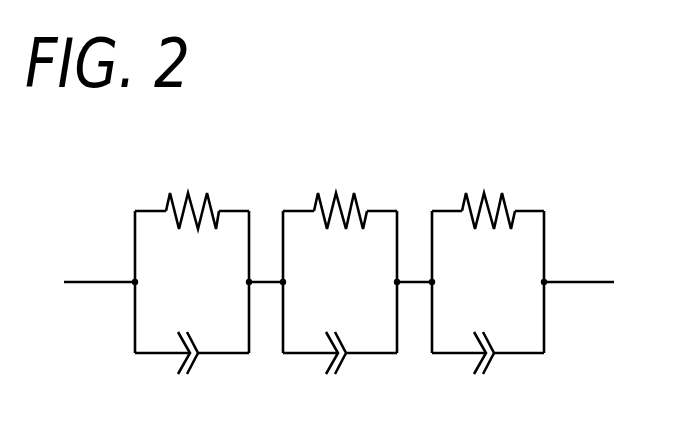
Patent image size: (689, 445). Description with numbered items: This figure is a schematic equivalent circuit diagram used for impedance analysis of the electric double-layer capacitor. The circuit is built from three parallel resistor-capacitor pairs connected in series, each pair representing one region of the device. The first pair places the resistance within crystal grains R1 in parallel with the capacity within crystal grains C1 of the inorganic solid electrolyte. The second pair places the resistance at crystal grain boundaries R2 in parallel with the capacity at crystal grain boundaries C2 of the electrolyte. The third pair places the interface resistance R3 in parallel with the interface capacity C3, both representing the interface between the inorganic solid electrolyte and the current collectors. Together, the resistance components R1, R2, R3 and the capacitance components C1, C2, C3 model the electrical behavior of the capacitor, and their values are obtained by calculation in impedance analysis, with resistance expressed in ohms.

The resistance within crystal grains R1 is at (192, 189).
The resistance at crystal grain boundaries R2 is at (340, 189).
The resistance at the electrolyte/current collector interface R3 is at (488, 189).
The capacity within crystal grains C1 is at (189, 372).
The capacity at crystal grain boundaries C2 is at (337, 372).
The capacity at the electrolyte/current collector interface C3 is at (485, 372).